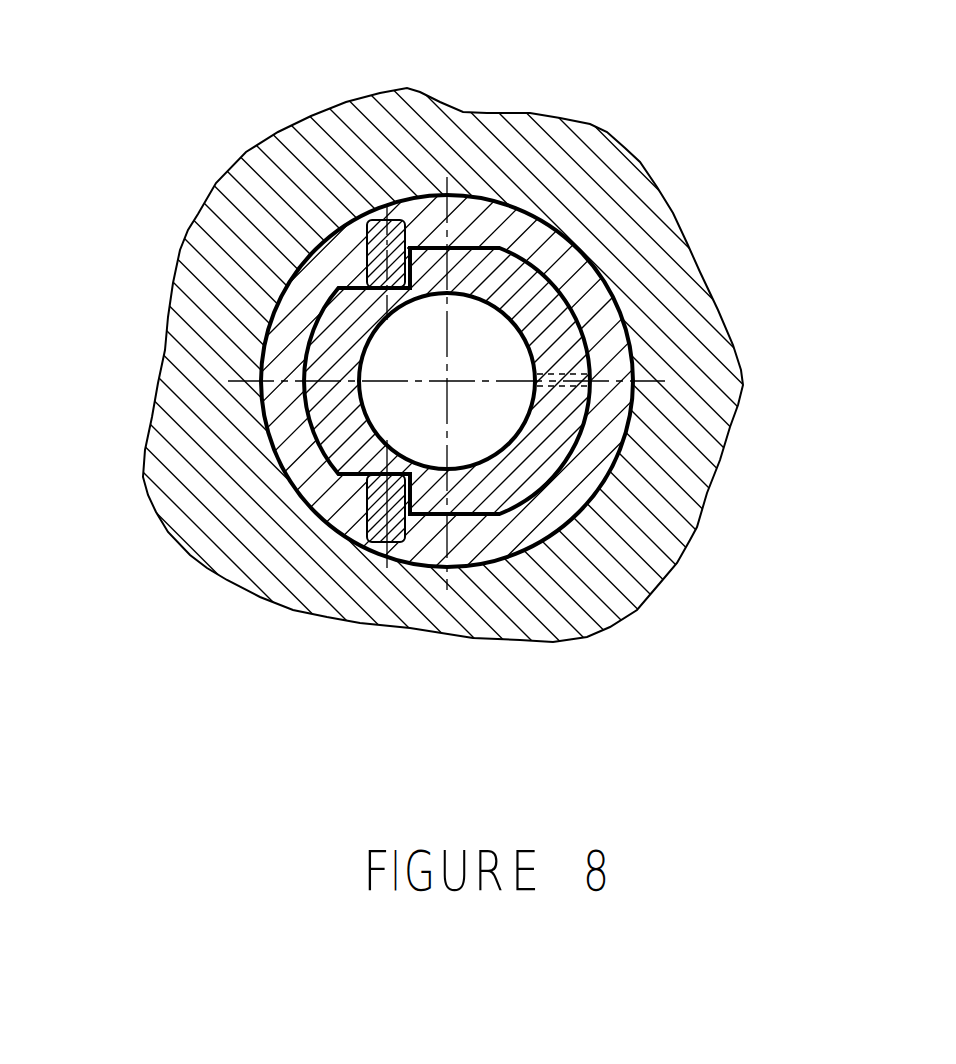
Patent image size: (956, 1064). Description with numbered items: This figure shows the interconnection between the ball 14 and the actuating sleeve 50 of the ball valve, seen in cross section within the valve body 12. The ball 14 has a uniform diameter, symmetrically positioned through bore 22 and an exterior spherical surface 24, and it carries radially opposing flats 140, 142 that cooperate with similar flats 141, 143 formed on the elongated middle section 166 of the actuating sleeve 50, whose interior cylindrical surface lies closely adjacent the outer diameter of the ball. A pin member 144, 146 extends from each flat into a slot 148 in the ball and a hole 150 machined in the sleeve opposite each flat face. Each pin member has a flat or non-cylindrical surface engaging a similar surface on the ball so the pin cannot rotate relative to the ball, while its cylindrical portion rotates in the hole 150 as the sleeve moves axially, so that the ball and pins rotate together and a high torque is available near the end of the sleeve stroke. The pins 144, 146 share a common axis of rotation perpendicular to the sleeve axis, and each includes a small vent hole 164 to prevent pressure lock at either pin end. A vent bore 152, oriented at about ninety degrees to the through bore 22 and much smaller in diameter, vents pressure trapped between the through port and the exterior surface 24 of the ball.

The housing 12 is at (653, 511).
The ball 14 is at (575, 352).
The bore 22 is at (442, 372).
The exterior surface 24 is at (570, 300).
The actuating sleeve 50 is at (598, 455).
The flat 140 is at (537, 237).
The flat 141 is at (425, 248).
The flat 142 is at (610, 627).
The flat 143 is at (410, 526).
The pin member 144 is at (337, 213).
The pin member 146 is at (367, 534).
The slot 148 is at (380, 278).
The hole 150 is at (433, 193).
The vent bore 152 is at (600, 372).
The vent hole 164 is at (376, 263).
The elongated middle section 166 is at (468, 228).